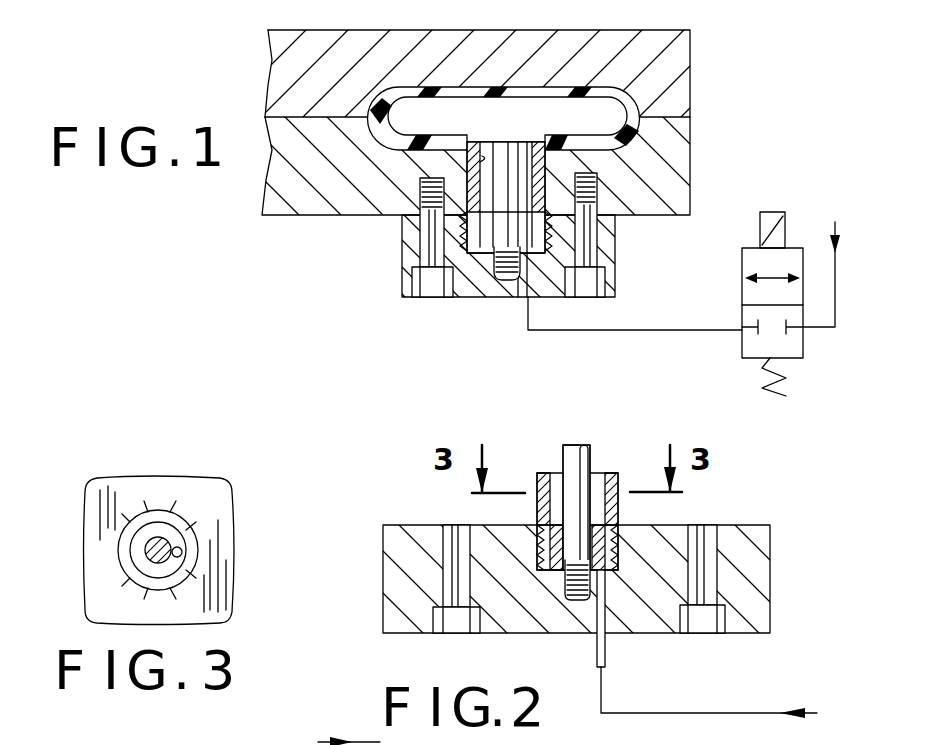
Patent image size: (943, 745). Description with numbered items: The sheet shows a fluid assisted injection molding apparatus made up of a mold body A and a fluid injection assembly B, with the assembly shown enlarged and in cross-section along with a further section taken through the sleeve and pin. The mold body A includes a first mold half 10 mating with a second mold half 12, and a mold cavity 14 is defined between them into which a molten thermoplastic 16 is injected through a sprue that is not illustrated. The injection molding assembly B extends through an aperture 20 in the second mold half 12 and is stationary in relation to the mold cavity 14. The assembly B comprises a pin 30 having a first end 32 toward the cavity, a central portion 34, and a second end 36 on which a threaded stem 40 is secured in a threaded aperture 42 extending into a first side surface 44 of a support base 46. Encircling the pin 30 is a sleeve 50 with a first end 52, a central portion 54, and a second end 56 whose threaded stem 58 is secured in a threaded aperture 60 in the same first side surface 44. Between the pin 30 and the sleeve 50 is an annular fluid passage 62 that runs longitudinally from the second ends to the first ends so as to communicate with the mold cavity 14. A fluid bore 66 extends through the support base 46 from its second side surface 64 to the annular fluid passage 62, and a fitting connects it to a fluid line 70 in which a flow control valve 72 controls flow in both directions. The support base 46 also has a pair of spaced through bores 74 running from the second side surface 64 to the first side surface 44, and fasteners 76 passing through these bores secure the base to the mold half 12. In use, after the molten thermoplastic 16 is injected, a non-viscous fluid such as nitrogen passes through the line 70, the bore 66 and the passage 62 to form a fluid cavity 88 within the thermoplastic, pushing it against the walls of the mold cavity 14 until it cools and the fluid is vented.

In FIG. 1, the first mold half 10 is at (676, 93).
In FIG. 1, the second mold half 12 is at (676, 157).
In FIG. 1, the mold cavity 14 is at (414, 96).
In FIG. 1, the molten thermoplastic 16 is at (392, 94).
In FIG. 1, the aperture 20 is at (480, 158).
In FIG. 1, the pin 30 is at (530, 207).
In FIG. 2, the pin 30 is at (592, 420).
In FIG. 3, the pin 30 is at (122, 548).
In FIG. 1, the first end 32 is at (533, 115).
In FIG. 2, the central portion 34 is at (580, 442).
In FIG. 2, the second end 36 is at (553, 572).
In FIG. 2, the threaded stem 40 is at (568, 600).
In FIG. 2, the threaded aperture 42 is at (603, 597).
In FIG. 2, the first side surface 44 is at (393, 523).
In FIG. 3, the first side surface 44 is at (113, 497).
In FIG. 2, the support base 46 is at (385, 605).
In FIG. 1, the sleeve 50 is at (556, 125).
In FIG. 2, the sleeve 50 is at (614, 460).
In FIG. 3, the sleeve 50 is at (170, 490).
In FIG. 1, the first end 52 is at (476, 100).
In FIG. 2, the central portion 54 is at (537, 480).
In FIG. 2, the second end 56 is at (540, 515).
In FIG. 2, the threaded stem 58 is at (540, 552).
In FIG. 2, the threaded aperture 60 is at (617, 556).
In FIG. 1, the annular fluid passage 62 is at (478, 297).
In FIG. 2, the annular fluid passage 62 is at (562, 478).
In FIG. 2, the second side surface 64 is at (752, 633).
In FIG. 2, the fluid bore 66 is at (605, 632).
In FIG. 3, the fluid bore 66 is at (183, 553).
In FIG. 1, the fluid line 70 is at (618, 331).
In FIG. 2, the fluid line 70 is at (680, 713).
In FIG. 1, the flow control valve 72 is at (728, 270).
In FIG. 2, the through bores 74 is at (455, 567).
In FIG. 1, the fasteners 76 is at (423, 253).
In FIG. 1, the fluid cavity 88 is at (600, 105).
In FIG. 1, the mold body A is at (258, 44).
In FIG. 1, the fluid injection assembly B is at (385, 234).
In FIG. 2, the fluid injection assembly B is at (752, 512).